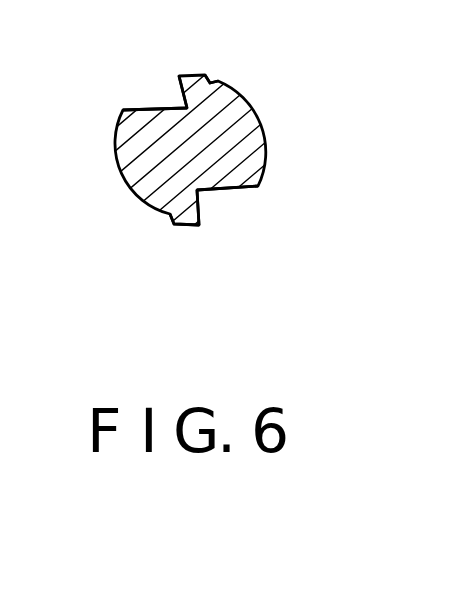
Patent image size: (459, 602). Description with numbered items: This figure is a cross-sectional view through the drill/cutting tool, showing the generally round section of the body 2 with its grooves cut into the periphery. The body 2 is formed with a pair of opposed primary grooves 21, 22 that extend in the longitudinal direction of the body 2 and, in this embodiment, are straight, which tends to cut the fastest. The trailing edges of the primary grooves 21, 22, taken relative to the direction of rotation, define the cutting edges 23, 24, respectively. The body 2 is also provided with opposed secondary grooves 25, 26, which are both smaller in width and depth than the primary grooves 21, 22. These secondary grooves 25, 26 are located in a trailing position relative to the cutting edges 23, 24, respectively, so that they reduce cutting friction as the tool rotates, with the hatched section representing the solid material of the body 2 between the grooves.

The body 2 is at (267, 117).
The primary groove 21 is at (181, 100).
The primary groove 22 is at (207, 202).
The cutting edge 23 is at (184, 101).
The cutting edge 24 is at (198, 229).
The secondary groove 25 is at (212, 78).
The secondary groove 26 is at (170, 224).